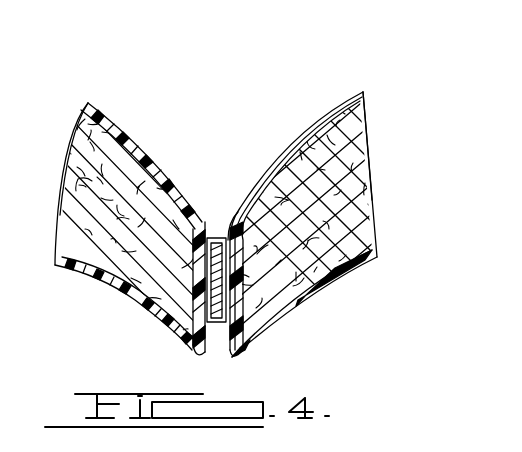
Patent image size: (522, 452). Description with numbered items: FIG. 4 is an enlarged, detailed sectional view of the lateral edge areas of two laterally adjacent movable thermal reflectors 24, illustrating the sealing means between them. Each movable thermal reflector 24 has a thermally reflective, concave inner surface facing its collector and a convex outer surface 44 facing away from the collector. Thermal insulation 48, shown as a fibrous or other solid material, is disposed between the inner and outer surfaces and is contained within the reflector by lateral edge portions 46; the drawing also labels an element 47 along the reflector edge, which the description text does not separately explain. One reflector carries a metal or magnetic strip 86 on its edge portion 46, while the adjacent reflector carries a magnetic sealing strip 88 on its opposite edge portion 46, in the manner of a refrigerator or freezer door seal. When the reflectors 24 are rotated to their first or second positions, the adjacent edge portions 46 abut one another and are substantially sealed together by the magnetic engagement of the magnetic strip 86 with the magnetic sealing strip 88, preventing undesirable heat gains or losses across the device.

The movable thermal reflector 24 is at (168, 168).
The convex outer surface 44 is at (127, 142).
The lateral edge portion 46 is at (210, 230).
The lower edge binding 47 is at (125, 295).
The thermal insulation 48 is at (98, 243).
The metal or magnetic strip 86 is at (233, 258).
The magnetic sealing strip 88 is at (228, 235).